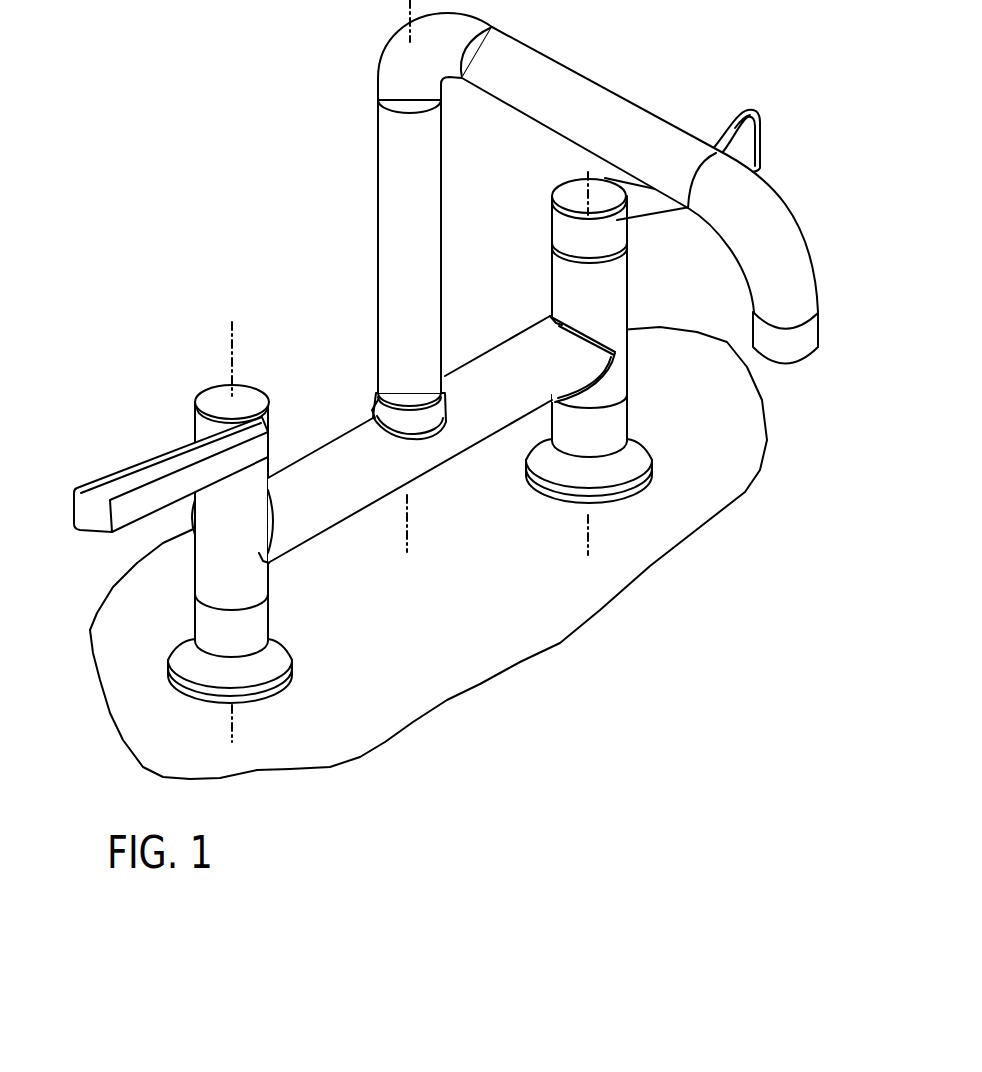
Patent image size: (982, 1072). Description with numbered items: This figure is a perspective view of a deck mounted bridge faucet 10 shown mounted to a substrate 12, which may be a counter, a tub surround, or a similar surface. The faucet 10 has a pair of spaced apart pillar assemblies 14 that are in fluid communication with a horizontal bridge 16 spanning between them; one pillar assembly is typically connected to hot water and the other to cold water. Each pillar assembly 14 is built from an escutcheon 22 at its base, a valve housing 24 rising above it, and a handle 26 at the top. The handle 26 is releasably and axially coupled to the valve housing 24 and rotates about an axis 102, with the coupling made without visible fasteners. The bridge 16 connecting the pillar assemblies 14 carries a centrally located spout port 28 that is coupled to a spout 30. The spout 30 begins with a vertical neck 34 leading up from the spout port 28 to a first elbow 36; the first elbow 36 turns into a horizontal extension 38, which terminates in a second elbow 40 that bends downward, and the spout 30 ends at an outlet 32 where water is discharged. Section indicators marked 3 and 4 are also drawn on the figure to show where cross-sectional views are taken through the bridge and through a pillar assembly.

The deck mounted bridge faucet 10 is at (468, 389).
The substrate 12 is at (470, 660).
The pillar assembly 14 is at (284, 697).
The horizontal bridge 16 is at (480, 446).
The escutcheon 22 is at (290, 640).
The valve housing 24 is at (277, 577).
The handle 26 is at (133, 466).
The spout port 28 is at (376, 404).
The spout 30 is at (591, 221).
The outlet 32 is at (808, 363).
The vertical neck 34 is at (442, 292).
The first elbow 36 is at (380, 72).
The horizontal extension 38 is at (598, 82).
The second elbow 40 is at (802, 245).
The axis 102 is at (590, 535).
The section line 3- 3 is at (401, 537).
The section line 4- 4 is at (228, 342).